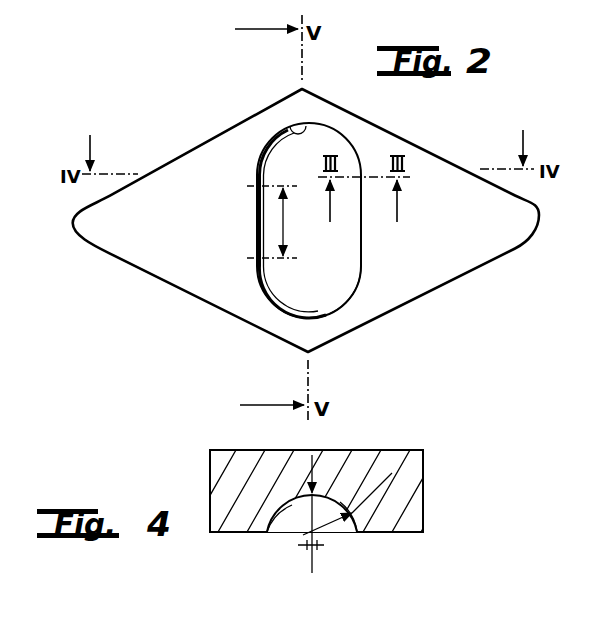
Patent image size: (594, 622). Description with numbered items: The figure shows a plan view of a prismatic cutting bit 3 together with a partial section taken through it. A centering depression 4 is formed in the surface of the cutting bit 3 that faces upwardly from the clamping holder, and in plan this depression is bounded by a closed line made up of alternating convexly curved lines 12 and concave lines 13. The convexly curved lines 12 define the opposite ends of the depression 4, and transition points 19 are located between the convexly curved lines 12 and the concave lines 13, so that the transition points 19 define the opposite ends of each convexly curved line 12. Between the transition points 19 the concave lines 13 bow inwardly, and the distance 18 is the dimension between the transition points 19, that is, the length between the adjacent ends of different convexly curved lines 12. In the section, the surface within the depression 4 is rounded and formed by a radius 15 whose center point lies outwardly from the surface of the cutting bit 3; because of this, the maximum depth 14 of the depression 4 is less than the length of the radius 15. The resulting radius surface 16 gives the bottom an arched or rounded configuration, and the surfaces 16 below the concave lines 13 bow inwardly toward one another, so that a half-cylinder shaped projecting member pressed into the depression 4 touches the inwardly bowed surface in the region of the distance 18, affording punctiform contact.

In FIG. 2, the cutting bit 3 is at (157, 289).
In FIG. 4, the cutting bit 3 is at (428, 541).
In FIG. 2, the centering depression 4 is at (268, 297).
In FIG. 4, the centering depression 4 is at (293, 517).
In FIG. 2, the convexly curved lines 12 is at (297, 127).
In FIG. 2, the concave lines 13 is at (263, 213).
In FIG. 4, the concave lines 13 is at (352, 531).
In FIG. 4, the maximum depth 14 is at (313, 512).
In FIG. 4, the radius 15 is at (318, 548).
In FIG. 2, the radius surface 16 is at (344, 283).
In FIG. 4, the radius surface 16 is at (280, 510).
In FIG. 2, the distance 18 is at (286, 226).
In FIG. 2, the transition points 19 is at (257, 182).
In FIG. 4, the transition points 19 is at (360, 523).